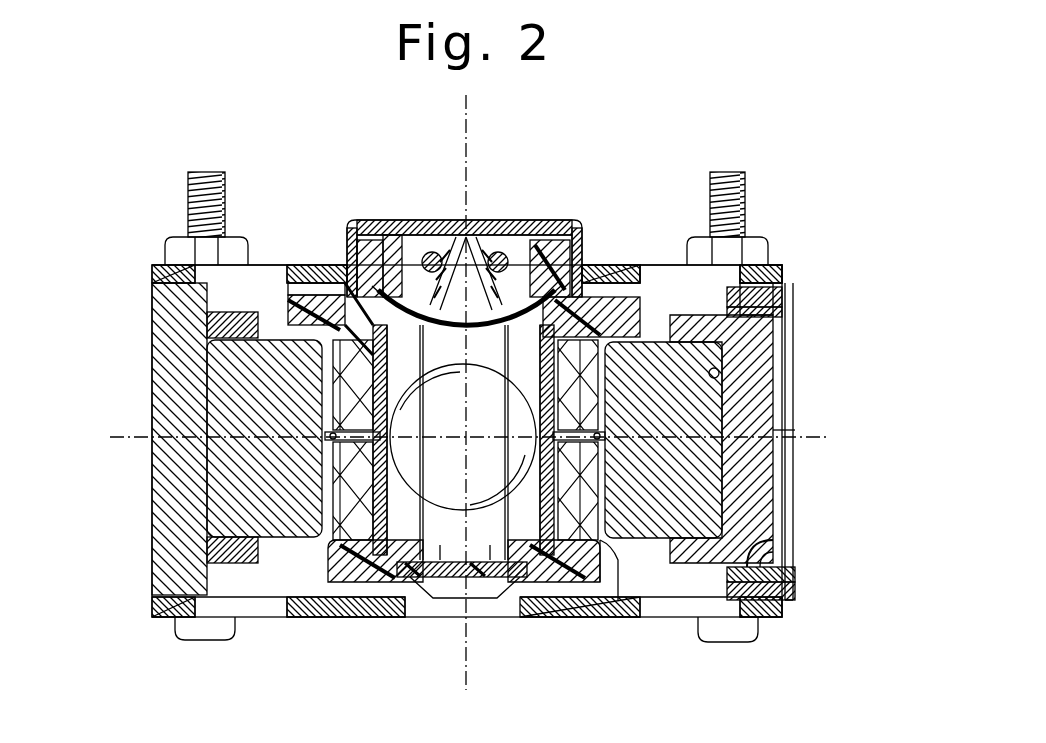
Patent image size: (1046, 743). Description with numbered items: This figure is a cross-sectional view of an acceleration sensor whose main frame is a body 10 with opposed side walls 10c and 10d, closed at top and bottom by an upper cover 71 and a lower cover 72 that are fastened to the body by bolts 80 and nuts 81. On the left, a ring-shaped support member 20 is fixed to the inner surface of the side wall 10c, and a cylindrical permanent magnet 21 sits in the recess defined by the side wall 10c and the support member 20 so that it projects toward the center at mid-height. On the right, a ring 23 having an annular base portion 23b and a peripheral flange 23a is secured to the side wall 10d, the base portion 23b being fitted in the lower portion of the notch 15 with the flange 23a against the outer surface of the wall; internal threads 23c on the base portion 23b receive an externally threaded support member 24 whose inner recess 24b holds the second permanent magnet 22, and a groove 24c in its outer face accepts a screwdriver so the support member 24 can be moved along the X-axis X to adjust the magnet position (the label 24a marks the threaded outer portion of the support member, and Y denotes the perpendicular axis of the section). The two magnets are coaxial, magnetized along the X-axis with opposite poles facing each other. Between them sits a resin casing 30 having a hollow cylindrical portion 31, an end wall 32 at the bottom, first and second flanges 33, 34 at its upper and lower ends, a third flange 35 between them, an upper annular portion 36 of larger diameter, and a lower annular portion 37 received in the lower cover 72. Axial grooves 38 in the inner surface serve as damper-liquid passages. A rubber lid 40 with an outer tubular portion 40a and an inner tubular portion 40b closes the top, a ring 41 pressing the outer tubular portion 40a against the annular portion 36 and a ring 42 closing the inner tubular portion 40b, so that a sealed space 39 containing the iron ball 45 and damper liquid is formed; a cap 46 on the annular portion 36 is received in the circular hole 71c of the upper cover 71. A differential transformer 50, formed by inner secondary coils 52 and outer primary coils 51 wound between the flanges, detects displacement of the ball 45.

The body 10 is at (148, 300).
The side wall 10c is at (152, 532).
The side wall 10d is at (795, 588).
The notch 15 is at (760, 555).
The support member 20 is at (225, 322).
The permanent magnet 21 is at (245, 370).
The permanent magnet 22 is at (690, 412).
The ring 23 is at (793, 308).
The peripheral flange 23a is at (793, 290).
The annular base portion 23b is at (782, 285).
The internal threads 23c is at (795, 348).
The support member 24 is at (755, 475).
The yoke upper portion 24a is at (758, 282).
The recess 24b is at (718, 375).
The groove 24c is at (780, 432).
The casing 30 is at (648, 300).
The hollow cylindrical portion 31 is at (610, 545).
The end wall 32 is at (450, 568).
The first flange 33 is at (612, 268).
The second flange 34 is at (585, 545).
The third flange 35 is at (333, 433).
The annular portion 36 is at (562, 245).
The annular portion 37 is at (518, 540).
The grooves 38 is at (407, 545).
The sealed space 39 is at (470, 545).
The lid 40 is at (418, 294).
The outer tubular portion 40a is at (386, 225).
The inner tubular portion 40b is at (480, 230).
The ring 41 is at (430, 242).
The ring 42 is at (500, 248).
The iron ball 45 is at (490, 495).
The cap 46 is at (356, 222).
The differential transformer 50 is at (330, 493).
The primary coil 51 is at (320, 292).
The secondary coil 52 is at (346, 280).
The cover 71 is at (172, 265).
The circular hole 71c is at (592, 268).
The cover 72 is at (158, 607).
The bolts 80 is at (203, 640).
The nuts 81 is at (232, 248).
The X-axis X is at (800, 450).
The Y axis Y is at (468, 145).